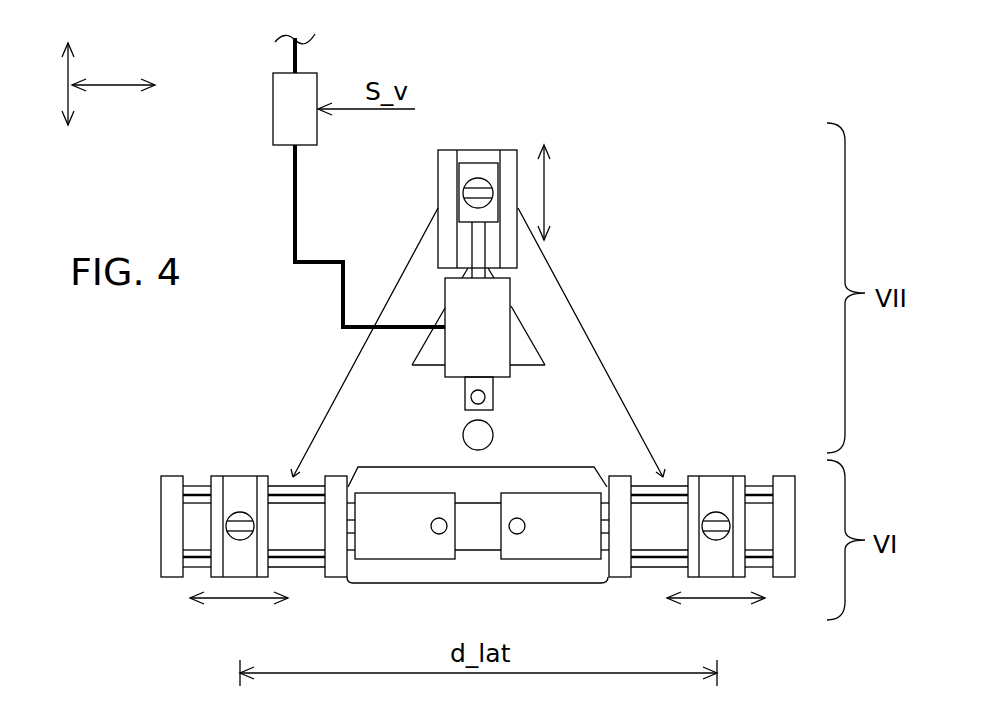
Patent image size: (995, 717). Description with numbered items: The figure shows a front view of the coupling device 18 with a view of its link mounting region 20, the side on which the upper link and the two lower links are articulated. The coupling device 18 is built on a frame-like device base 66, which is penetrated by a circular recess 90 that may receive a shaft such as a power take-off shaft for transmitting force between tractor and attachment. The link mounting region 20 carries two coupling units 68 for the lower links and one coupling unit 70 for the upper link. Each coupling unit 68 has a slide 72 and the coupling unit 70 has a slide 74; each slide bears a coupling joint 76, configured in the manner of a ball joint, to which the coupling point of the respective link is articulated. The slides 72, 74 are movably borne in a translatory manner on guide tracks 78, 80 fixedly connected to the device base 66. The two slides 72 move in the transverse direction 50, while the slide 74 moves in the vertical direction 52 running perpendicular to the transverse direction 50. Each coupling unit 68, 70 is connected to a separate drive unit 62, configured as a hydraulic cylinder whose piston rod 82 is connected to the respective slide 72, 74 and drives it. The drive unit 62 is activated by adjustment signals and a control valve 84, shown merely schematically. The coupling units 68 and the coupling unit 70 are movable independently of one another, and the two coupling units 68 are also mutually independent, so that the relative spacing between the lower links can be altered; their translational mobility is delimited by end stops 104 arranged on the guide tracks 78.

The coupling device 18 is at (640, 80).
The link mounting region 20 is at (552, 335).
The transverse direction 50 is at (130, 84).
The vertical direction 52 is at (68, 92).
The drive unit 62 is at (492, 310).
The device base 66 is at (342, 413).
The coupling unit 68 is at (250, 475).
The coupling unit 70 is at (470, 163).
The slide 72 is at (228, 487).
The slide 74 is at (490, 168).
The coupling joint 76 is at (467, 183).
The guide track 78 is at (302, 570).
The guide track 80 is at (445, 193).
The piston rod 82 is at (482, 248).
The control valve 84 is at (276, 117).
The circular recess 90 is at (462, 435).
The end stop 104 is at (172, 562).